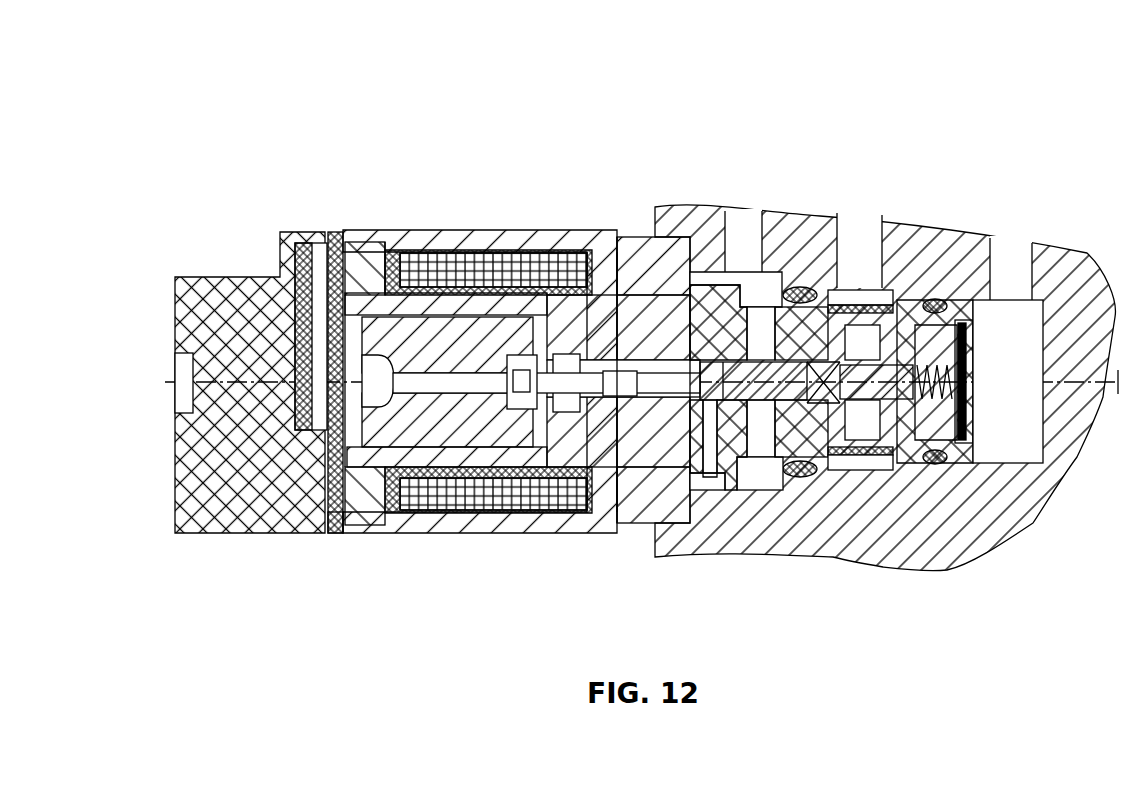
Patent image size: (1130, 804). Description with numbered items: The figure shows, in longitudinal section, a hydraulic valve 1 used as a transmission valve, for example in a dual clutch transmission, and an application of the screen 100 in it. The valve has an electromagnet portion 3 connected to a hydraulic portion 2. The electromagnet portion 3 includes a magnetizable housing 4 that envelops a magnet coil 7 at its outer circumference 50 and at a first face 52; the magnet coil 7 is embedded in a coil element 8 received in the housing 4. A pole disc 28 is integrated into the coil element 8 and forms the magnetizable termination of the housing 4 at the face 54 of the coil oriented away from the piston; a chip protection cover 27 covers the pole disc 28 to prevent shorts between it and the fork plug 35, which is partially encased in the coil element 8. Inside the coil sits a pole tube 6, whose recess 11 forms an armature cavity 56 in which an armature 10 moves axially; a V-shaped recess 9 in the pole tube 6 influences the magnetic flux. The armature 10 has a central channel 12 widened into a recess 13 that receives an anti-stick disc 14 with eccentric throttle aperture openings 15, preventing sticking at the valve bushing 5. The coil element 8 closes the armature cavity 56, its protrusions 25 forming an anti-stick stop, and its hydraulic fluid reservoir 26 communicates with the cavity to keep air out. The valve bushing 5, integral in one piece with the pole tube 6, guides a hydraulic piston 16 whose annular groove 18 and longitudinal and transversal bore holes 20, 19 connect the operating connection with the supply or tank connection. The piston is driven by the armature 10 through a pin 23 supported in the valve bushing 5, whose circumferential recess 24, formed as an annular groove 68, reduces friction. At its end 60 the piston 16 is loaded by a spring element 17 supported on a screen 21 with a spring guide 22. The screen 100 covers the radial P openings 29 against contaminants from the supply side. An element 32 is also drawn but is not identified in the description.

The hydraulic valve 1 is at (250, 138).
The hydraulic portion 2 is at (885, 363).
The electromagnet portion 3 is at (487, 328).
The magnetizable housing 4 is at (498, 322).
The valve bushing 5 is at (925, 470).
The pole tube 6 is at (452, 515).
The magnet coil 7 is at (476, 250).
The coil element 8 is at (393, 293).
The V-shaped recess 9 is at (483, 512).
The armature 10 is at (445, 300).
The recess 11 is at (562, 512).
The central channel 12 is at (457, 461).
The recess 13 is at (508, 520).
The anti-stick disc 14 is at (562, 283).
The throttle aperture openings 15 is at (586, 300).
The hydraulic piston 16 is at (805, 478).
The spring element 17 is at (960, 446).
The circumferential annular groove 18 is at (760, 300).
The transversal bore holes 19 is at (830, 303).
The longitudinal bore holes 20 is at (840, 480).
The screen 21 is at (963, 393).
The spring guide 22 is at (976, 368).
The pin 23 is at (668, 400).
The circumferential recess 24 is at (606, 532).
The protrusions 25 is at (356, 245).
The hydraulic fluid reservoir 26 is at (327, 243).
The chip protection cover 27 is at (227, 357).
The pole disc 28 is at (338, 536).
The radial P openings 29 is at (530, 300).
The washer 32 is at (356, 528).
The fork plug 35 is at (180, 336).
The outer circumference 50 is at (505, 262).
The first face 52 is at (606, 300).
The face 54 is at (368, 300).
The armature cavity 56 is at (545, 520).
The end 60 is at (925, 300).
The circumferential annular groove 68 is at (639, 555).
The screen 100 is at (851, 305).